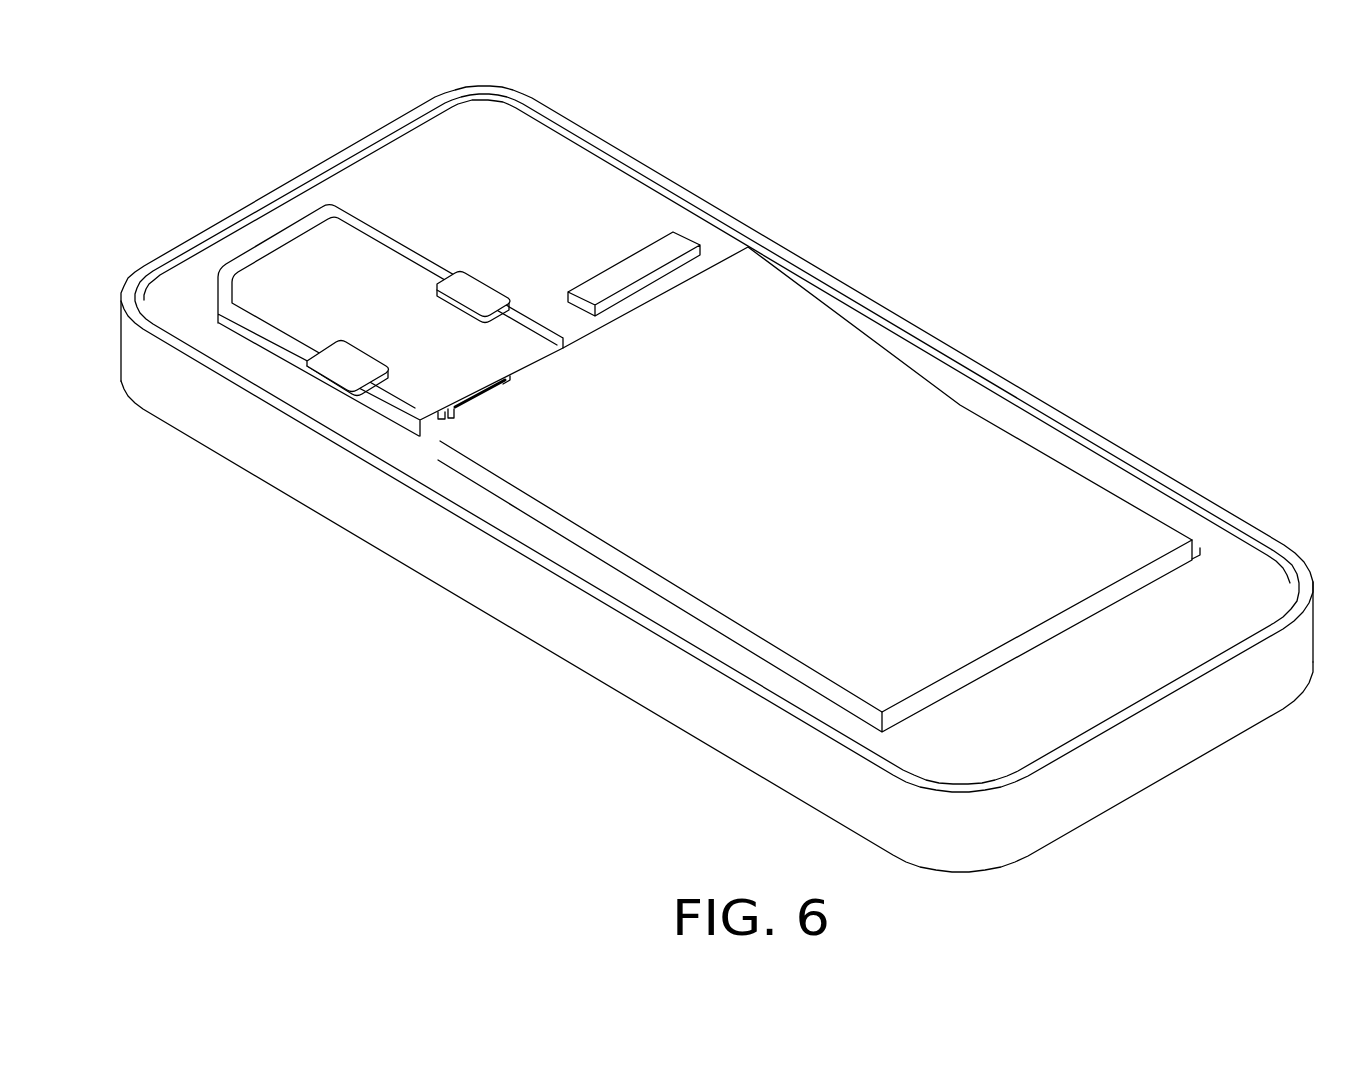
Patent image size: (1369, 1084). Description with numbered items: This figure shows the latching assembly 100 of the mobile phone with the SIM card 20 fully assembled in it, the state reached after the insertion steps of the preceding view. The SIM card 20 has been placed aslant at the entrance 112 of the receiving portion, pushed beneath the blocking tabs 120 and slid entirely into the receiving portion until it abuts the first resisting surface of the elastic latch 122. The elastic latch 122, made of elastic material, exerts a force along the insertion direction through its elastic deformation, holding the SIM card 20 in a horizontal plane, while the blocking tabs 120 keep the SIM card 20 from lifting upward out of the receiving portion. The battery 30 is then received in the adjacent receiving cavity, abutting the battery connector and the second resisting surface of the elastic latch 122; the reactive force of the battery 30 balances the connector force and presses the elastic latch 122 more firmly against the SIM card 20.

The latching assembly 100 is at (935, 117).
The SIM card 20 is at (313, 262).
The battery 30 is at (938, 453).
The entrance 112 is at (528, 368).
The blocking tab 120 is at (343, 357).
The elastic latch 122 is at (447, 423).